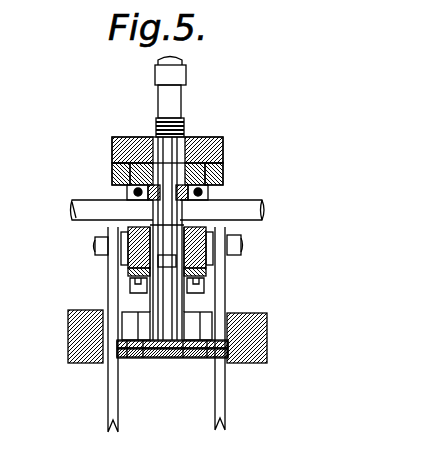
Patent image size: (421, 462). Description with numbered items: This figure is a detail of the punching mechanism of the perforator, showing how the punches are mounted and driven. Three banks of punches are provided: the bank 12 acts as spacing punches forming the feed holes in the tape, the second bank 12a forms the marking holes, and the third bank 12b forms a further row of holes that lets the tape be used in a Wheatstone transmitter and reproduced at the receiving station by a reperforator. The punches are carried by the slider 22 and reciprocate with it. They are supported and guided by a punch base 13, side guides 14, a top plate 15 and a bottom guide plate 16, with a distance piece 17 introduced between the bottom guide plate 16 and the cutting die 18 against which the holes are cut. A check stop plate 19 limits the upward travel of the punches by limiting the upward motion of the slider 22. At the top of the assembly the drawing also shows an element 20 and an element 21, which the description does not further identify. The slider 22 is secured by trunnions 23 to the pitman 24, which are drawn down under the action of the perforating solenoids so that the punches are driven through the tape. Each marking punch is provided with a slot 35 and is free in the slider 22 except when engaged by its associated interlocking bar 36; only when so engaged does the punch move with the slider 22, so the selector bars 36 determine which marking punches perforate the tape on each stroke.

The bank of punches 12 is at (160, 300).
The second bank of punches 12a is at (160, 299).
The third bank of punches 12b is at (168, 309).
The punch base 13 is at (75, 320).
The side guides 14 is at (114, 173).
The top plate 15 is at (215, 150).
The bottom guide plate 16 is at (114, 357).
The distance piece 17 is at (130, 360).
The cutting die 18 is at (143, 360).
The check stop plate 19 is at (118, 138).
The knob 20 is at (182, 63).
The threaded stem 21 is at (184, 119).
The slider 22 is at (130, 192).
The trunnions 23 is at (94, 247).
The pitman 24 is at (108, 407).
The slot 35 is at (140, 210).
The interlocking bar 36 is at (150, 207).